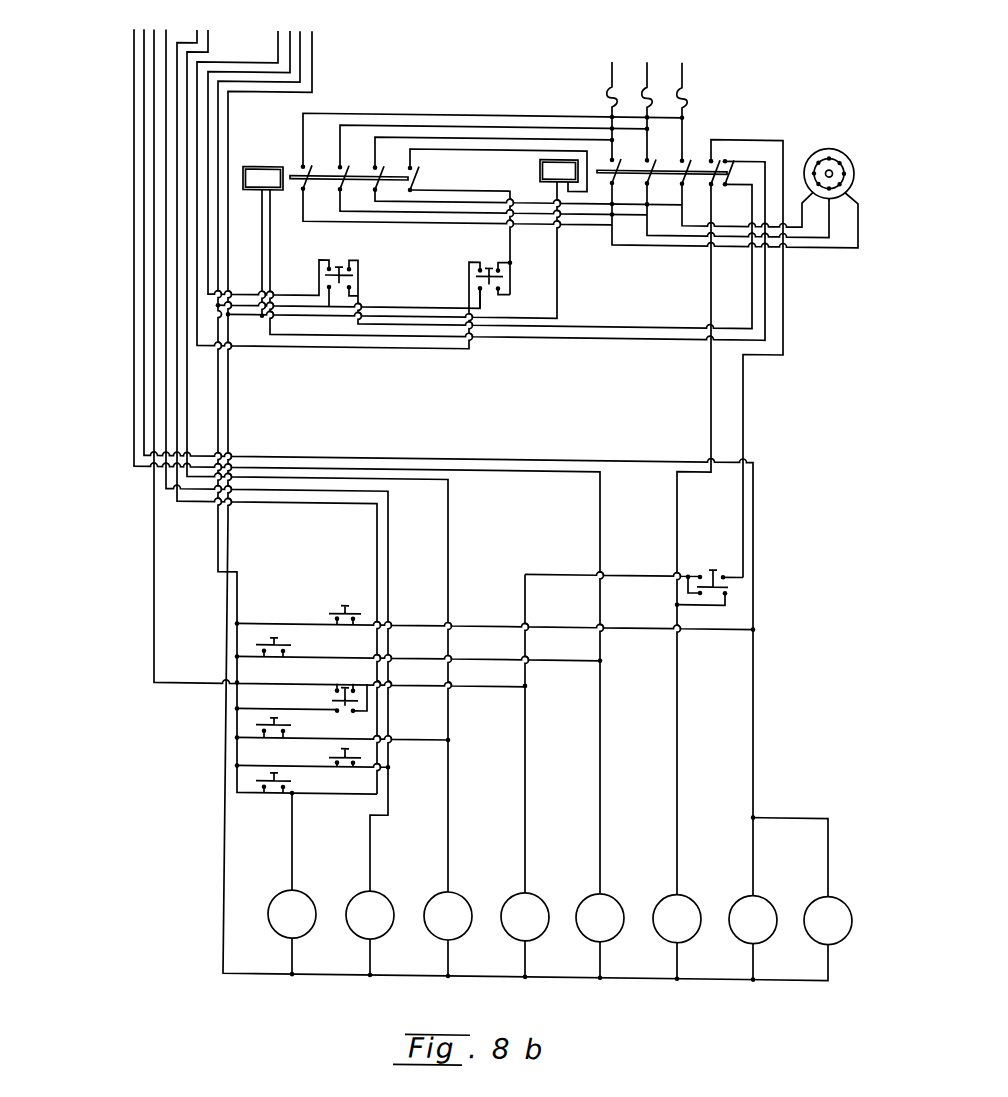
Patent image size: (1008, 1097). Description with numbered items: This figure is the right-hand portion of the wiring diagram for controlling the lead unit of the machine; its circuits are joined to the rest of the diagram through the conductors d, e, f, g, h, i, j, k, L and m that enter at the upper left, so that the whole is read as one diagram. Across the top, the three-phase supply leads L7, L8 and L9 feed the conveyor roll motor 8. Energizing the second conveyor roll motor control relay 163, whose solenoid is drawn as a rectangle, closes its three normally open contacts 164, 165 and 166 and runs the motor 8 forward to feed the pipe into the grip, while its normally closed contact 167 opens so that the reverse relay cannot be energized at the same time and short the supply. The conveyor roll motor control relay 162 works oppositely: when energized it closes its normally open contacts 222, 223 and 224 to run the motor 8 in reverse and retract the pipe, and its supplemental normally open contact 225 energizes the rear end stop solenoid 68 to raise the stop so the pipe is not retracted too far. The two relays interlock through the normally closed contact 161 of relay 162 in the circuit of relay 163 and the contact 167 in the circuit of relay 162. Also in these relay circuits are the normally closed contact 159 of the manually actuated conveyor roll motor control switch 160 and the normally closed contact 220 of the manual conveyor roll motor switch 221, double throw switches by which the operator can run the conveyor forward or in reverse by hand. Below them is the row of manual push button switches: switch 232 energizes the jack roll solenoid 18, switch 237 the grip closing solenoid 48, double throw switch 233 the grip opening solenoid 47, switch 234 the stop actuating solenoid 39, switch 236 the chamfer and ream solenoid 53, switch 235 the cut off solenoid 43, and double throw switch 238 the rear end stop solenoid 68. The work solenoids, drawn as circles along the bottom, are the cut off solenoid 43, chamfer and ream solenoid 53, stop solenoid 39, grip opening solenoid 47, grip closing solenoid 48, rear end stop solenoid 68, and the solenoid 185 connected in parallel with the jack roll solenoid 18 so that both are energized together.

The conveyor roll motor 8 is at (843, 150).
The jack roll solenoid 18 is at (828, 920).
The stop actuating solenoid 39 is at (448, 916).
The cut off solenoid 43 is at (292, 914).
The grip opening solenoid 47 is at (525, 917).
The grip closing solenoid 48 is at (600, 918).
The chamfer and ream solenoid 53 is at (370, 915).
The rear end stop solenoid 68 is at (677, 918).
The normally closed contact 159 is at (333, 267).
The manually actuated conveyor roll motor control switch 160 is at (340, 267).
The normally closed contact 161 is at (728, 188).
The conveyor roll motor control relay 162 is at (559, 171).
The second conveyor roll motor control relay 163 is at (263, 178).
The normally open contact 164 is at (316, 167).
The normally open contact 165 is at (354, 168).
The normally open contact 166 is at (389, 168).
The normally closed contact 167 is at (410, 168).
The solenoid 185 is at (753, 919).
The normally closed contact 220 is at (486, 267).
The manual conveyor roll motor switch 221 is at (492, 267).
The normally open contact 222 is at (616, 157).
The normally open contact 223 is at (652, 157).
The normally open contact 224 is at (686, 157).
The supplemental normally open contact 225 is at (716, 180).
The switch 232 is at (344, 607).
The double throw switch 233 is at (344, 687).
The switch 234 is at (280, 721).
The switch 235 is at (280, 777).
The switch 236 is at (340, 751).
The switch 237 is at (279, 641).
The double throw switch 238 is at (713, 567).
The lead L7 is at (614, 73).
The lead L8 is at (649, 73).
The lead L9 is at (684, 75).
The conductor d is at (134, 98).
The conductor e is at (144, 85).
The conductor f is at (154, 73).
The conductor g is at (166, 58).
The conductor h is at (197, 40).
The conductor i is at (208, 45).
The conductor j is at (278, 44).
The conductor k is at (292, 52).
The conductor L is at (302, 62).
The conductor m is at (313, 75).